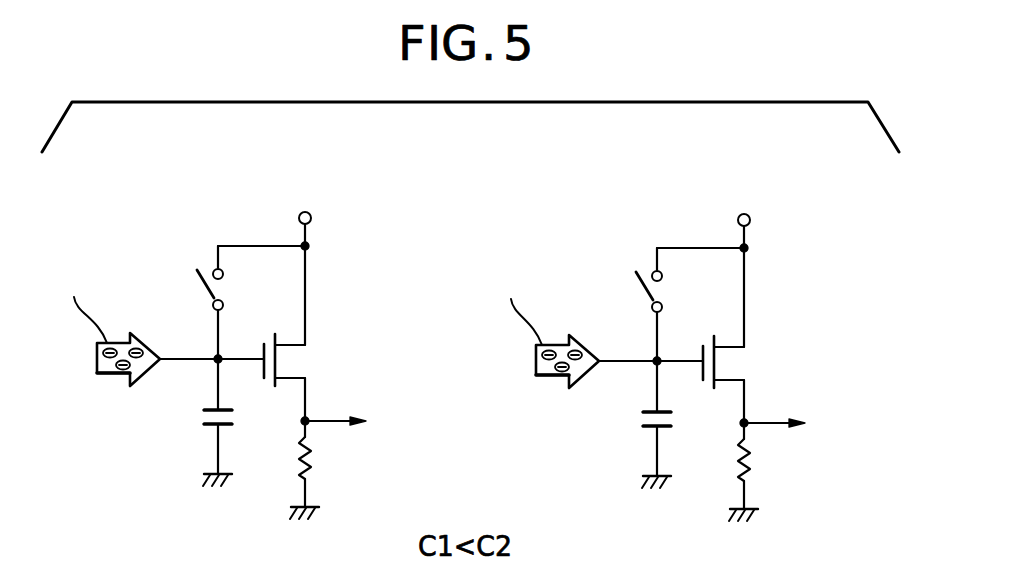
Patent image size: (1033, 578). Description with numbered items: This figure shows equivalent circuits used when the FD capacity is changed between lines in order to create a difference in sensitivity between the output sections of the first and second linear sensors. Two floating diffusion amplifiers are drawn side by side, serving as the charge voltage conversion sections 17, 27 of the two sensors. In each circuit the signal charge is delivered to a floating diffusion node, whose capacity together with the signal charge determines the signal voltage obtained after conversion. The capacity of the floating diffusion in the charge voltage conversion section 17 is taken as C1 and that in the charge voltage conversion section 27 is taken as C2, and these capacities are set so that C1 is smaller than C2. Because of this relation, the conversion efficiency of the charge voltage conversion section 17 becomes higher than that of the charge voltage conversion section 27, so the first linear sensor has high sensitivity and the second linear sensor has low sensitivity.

The charge voltage conversion section 17 is at (254, 332).
The charge voltage conversion section 27 is at (697, 333).
The capacity of the FD of the charge voltage conversion section 17 C1 is at (248, 419).
The capacity of the FD of the charge voltage conversion section 27 C2 is at (680, 436).